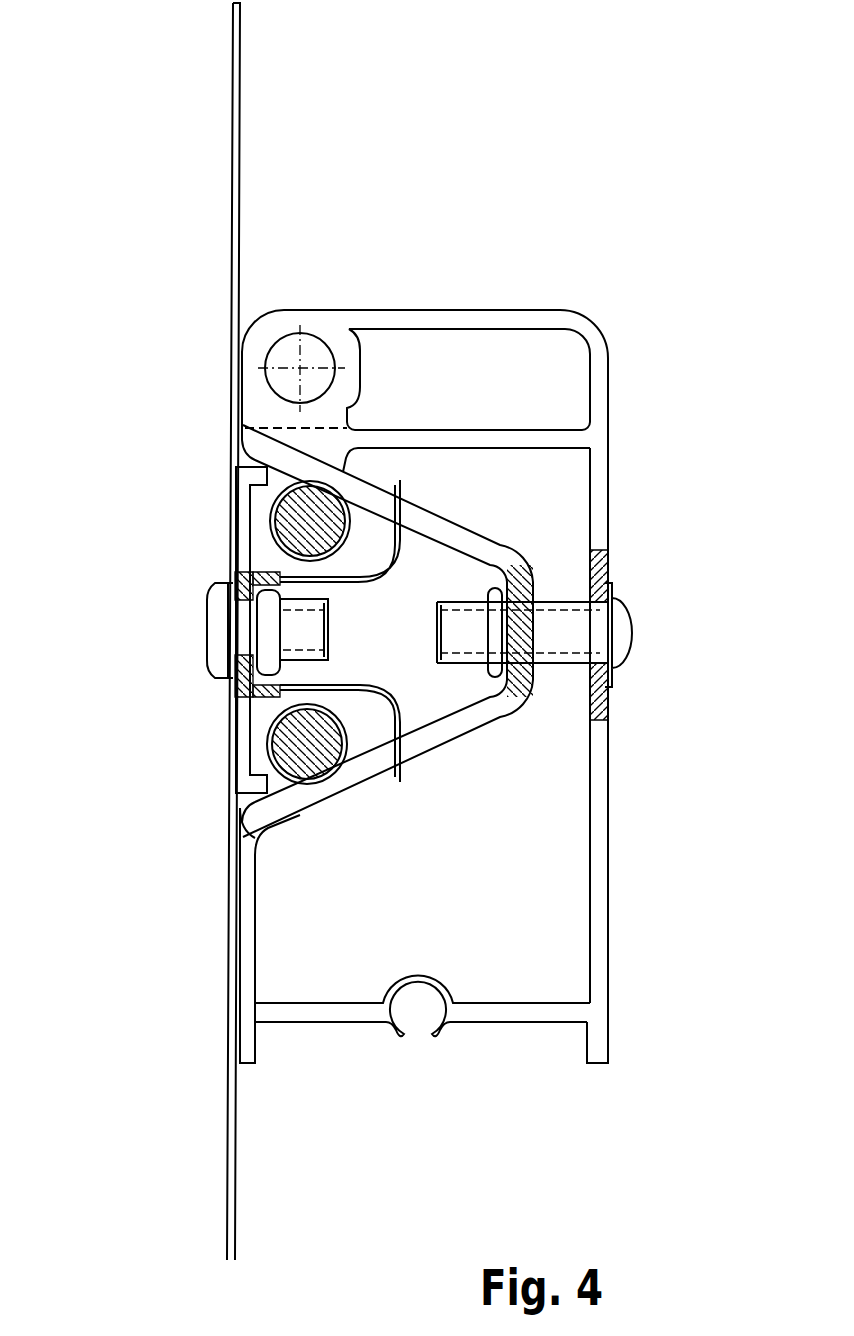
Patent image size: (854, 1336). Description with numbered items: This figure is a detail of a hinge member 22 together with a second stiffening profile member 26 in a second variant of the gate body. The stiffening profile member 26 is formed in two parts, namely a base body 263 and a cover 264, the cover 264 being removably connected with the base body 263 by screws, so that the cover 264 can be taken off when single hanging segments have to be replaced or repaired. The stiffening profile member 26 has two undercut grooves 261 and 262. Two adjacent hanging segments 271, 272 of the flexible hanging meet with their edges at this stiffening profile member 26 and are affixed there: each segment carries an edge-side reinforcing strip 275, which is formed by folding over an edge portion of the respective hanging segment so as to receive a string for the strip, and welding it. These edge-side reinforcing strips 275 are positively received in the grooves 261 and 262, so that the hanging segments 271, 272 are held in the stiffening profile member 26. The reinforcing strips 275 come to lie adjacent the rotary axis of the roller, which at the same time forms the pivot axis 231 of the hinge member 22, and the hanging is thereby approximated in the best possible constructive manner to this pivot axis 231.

The hinge member 22 is at (596, 850).
The second stiffening profile member 26 is at (318, 723).
The pivot axis 231 is at (300, 366).
The undercut groove 261 is at (357, 557).
The undercut groove 262 is at (357, 707).
The base body 263 is at (393, 550).
The cover 264 is at (236, 540).
The hanging segment 271 is at (230, 1104).
The hanging segment 272 is at (236, 155).
The edge-side reinforcing strip 275 is at (270, 508).